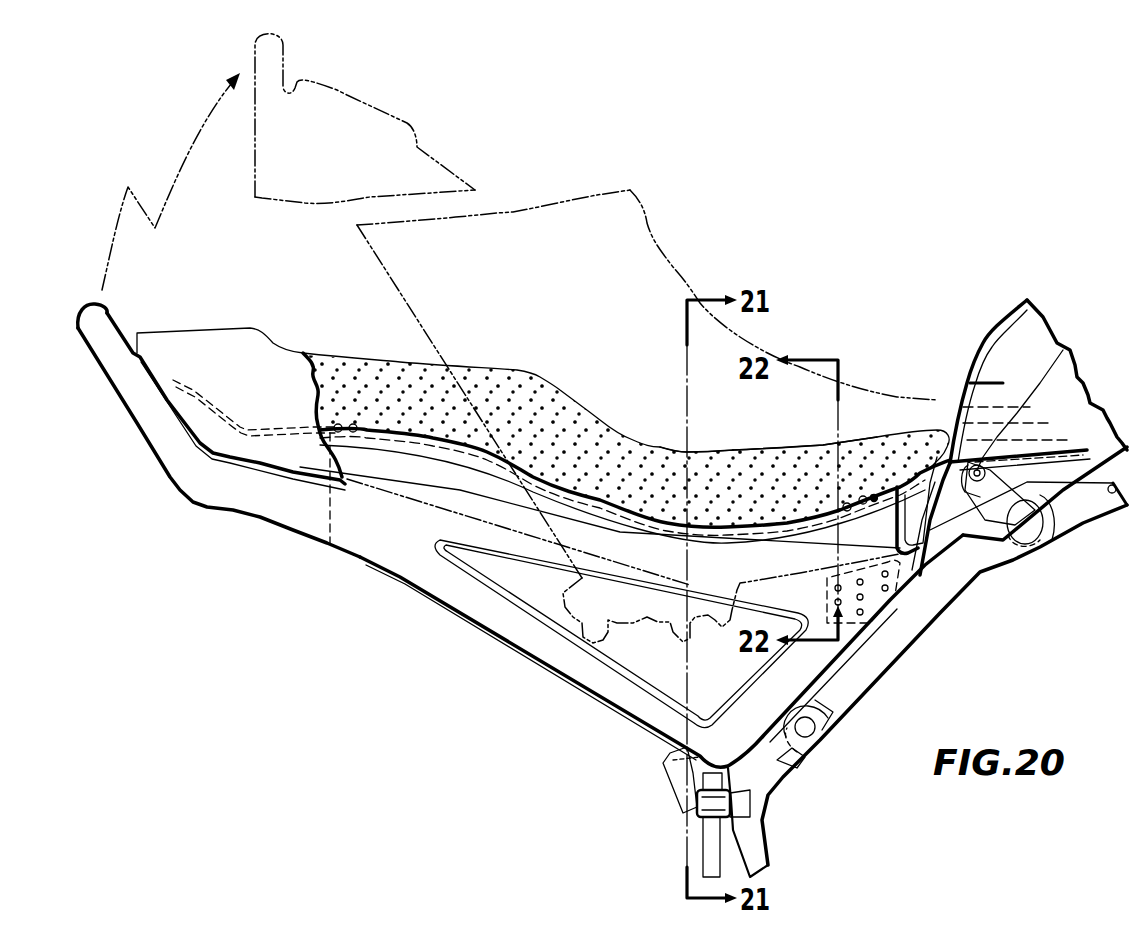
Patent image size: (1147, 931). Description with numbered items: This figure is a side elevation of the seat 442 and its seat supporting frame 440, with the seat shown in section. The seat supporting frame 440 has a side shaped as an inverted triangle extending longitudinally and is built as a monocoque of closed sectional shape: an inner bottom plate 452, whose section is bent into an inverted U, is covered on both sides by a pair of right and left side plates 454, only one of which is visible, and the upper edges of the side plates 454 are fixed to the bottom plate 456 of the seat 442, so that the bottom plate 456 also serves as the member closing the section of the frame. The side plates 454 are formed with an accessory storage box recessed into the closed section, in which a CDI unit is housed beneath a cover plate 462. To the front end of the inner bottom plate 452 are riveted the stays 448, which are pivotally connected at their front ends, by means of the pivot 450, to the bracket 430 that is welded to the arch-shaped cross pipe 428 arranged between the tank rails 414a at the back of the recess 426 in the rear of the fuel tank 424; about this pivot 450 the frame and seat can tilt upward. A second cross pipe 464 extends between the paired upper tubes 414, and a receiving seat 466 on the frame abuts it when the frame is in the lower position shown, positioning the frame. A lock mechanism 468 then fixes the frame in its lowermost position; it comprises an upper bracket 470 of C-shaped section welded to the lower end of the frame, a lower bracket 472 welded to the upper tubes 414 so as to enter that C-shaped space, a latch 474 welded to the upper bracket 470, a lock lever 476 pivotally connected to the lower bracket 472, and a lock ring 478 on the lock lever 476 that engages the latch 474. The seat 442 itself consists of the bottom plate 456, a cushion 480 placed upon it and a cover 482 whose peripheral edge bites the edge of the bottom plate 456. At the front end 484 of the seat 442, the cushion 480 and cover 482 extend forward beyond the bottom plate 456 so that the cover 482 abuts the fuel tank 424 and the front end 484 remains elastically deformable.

The upper tube 414 is at (940, 620).
The tank rail 414a is at (1100, 517).
The fuel tank 424 is at (1003, 313).
The recess 426 is at (1060, 484).
The cross pipe 428 is at (1040, 540).
The bracket 430 is at (1043, 537).
The seat supporting frame 440 is at (560, 675).
The seat 442 is at (560, 380).
The stay 448 is at (963, 552).
The pivot 450 is at (1063, 350).
The inner bottom plate 452 is at (613, 520).
The side plate 454 is at (477, 611).
The bottom plate 456 is at (750, 527).
The cover plate 462 is at (540, 615).
The cross pipe 464 is at (810, 747).
The receiving seat 466 is at (803, 753).
The lock mechanism 468 is at (646, 801).
The upper bracket 470 is at (668, 748).
The lower bracket 472 is at (670, 777).
The latch 474 is at (713, 770).
The lock lever 476 is at (700, 853).
The lock ring 478 is at (693, 813).
The cushion 480 is at (737, 467).
The cover 482 is at (710, 450).
The front end 484 is at (937, 430).